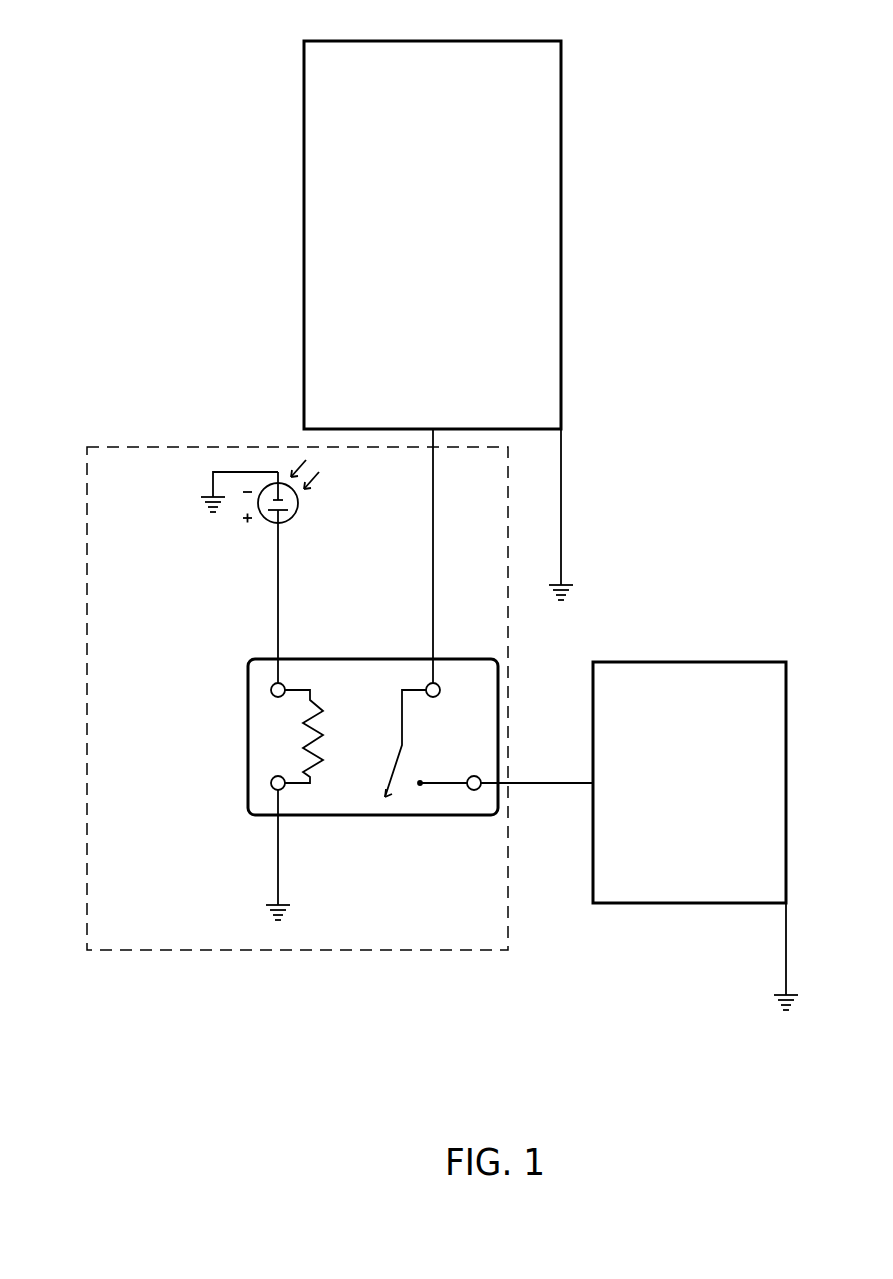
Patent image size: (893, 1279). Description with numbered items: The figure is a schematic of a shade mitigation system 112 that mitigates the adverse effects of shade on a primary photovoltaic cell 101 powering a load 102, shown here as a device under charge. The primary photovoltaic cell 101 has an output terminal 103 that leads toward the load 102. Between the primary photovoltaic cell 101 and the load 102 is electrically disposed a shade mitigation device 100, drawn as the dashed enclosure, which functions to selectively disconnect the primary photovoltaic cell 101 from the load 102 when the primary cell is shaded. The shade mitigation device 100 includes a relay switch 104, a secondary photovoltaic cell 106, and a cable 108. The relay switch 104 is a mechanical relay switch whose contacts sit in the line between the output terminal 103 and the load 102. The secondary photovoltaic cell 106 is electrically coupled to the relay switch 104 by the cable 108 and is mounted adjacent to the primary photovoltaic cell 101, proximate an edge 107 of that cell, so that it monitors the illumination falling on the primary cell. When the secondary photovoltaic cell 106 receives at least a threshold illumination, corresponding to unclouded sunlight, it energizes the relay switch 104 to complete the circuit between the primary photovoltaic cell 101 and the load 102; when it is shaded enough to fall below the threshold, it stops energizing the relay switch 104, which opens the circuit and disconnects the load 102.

The shade mitigation device 100 is at (58, 513).
The primary photovoltaic cell 101 is at (498, 41).
The load 102 is at (719, 662).
The output terminal 103 is at (441, 430).
The relay switch 104 is at (310, 659).
The secondary photovoltaic cell 106 is at (291, 519).
The edge 107 is at (539, 431).
The cable 108 is at (278, 596).
The shade mitigation system 112 is at (116, 407).